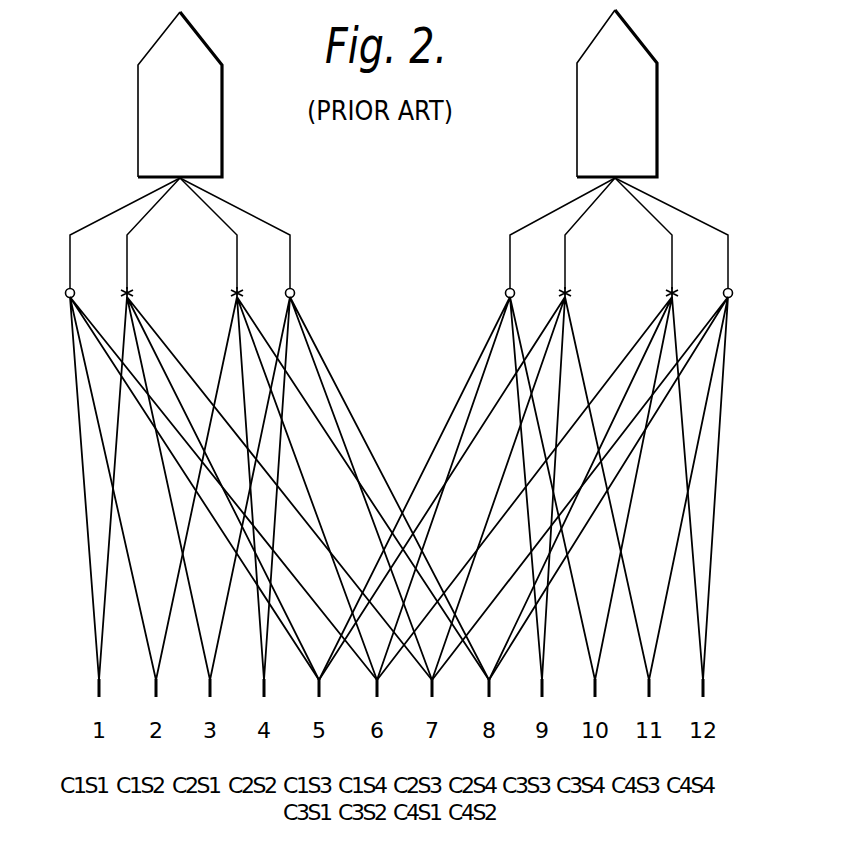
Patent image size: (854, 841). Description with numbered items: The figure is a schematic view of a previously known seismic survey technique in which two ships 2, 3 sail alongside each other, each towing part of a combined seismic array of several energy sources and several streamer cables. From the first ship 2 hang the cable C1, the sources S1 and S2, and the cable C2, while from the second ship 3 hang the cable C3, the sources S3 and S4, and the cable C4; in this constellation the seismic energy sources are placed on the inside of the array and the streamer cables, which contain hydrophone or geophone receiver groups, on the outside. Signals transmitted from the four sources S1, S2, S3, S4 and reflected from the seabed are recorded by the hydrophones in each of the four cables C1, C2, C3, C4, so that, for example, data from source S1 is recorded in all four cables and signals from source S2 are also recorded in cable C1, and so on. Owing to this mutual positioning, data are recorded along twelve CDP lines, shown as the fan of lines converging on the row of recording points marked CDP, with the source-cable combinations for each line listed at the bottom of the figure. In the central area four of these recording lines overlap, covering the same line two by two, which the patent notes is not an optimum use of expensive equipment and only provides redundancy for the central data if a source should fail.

The ship 2 is at (193, 43).
The ship 3 is at (630, 51).
The cable C1 is at (110, 242).
The energy source S1 is at (150, 242).
The energy source S2 is at (211, 242).
The cable C2 is at (254, 242).
The cable C3 is at (544, 242).
The energy source S3 is at (587, 242).
The energy source S4 is at (646, 242).
The cable C4 is at (690, 242).
The CDP-lines CDP is at (438, 687).